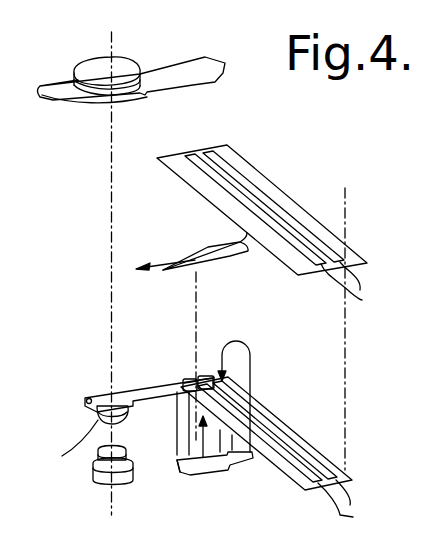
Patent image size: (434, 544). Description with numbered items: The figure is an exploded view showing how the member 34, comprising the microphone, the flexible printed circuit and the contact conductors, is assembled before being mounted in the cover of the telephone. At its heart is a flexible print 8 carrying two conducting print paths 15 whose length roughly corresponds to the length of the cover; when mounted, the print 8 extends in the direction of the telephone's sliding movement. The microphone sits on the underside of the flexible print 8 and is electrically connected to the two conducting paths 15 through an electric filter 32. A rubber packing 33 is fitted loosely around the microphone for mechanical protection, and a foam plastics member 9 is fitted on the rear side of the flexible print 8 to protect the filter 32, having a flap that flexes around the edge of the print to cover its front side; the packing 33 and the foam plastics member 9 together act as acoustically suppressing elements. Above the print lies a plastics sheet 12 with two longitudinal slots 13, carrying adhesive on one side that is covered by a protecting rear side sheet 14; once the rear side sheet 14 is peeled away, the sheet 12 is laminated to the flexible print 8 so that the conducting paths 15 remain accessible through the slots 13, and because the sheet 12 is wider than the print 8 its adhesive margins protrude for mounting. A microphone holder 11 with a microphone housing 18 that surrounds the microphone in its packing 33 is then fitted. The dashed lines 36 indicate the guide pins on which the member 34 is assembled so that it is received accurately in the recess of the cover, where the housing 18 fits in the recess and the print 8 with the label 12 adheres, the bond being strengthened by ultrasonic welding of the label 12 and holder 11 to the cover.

The flexible print 8 is at (300, 438).
The foam plastics member 9 is at (202, 473).
The microphone holder 11 is at (173, 70).
The plastics sheet 12 is at (262, 177).
The longitudinal slots 13 is at (357, 293).
The protecting rear side sheet 14 is at (202, 248).
The conducting print paths 15 is at (354, 503).
The microphone housing 18 is at (97, 67).
The electric filter 32 is at (206, 375).
The rubber packing 33 is at (128, 482).
The member 34 is at (307, 173).
The dashed lines 36 is at (111, 273).